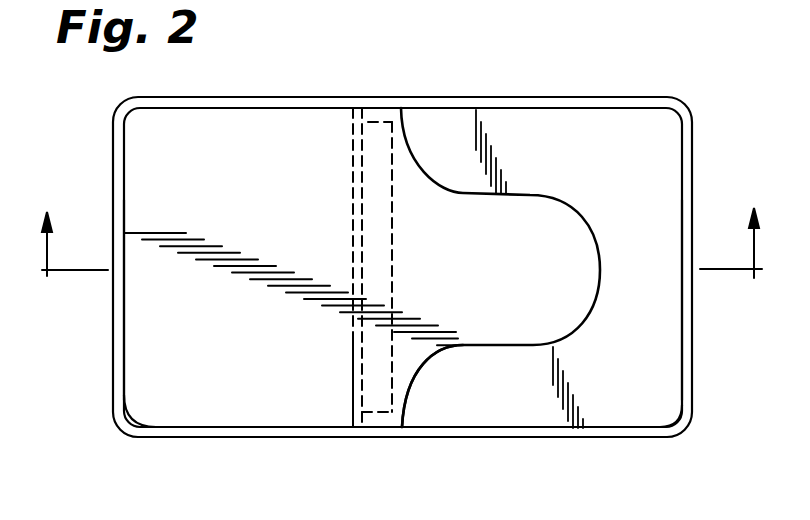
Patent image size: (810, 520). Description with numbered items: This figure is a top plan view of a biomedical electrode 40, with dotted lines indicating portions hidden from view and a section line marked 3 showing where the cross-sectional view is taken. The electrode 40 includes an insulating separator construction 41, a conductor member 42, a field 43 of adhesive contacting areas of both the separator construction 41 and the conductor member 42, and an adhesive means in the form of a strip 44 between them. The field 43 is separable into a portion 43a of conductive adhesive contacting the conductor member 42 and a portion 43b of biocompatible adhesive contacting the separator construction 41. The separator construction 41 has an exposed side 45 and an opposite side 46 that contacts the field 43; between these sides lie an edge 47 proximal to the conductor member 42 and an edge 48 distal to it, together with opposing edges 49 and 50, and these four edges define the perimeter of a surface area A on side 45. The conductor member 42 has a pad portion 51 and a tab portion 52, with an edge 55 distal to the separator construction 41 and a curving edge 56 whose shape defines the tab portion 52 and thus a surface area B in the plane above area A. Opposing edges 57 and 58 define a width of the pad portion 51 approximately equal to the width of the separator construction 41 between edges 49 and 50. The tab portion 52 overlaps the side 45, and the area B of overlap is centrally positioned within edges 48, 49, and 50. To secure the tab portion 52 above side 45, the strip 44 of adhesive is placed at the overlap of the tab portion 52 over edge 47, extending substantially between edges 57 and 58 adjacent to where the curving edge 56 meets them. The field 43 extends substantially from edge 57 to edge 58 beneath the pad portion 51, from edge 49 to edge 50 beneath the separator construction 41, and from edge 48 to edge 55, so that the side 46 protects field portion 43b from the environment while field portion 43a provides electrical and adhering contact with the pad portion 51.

The electrode 40 is at (95, 431).
The insulating separator construction 41 is at (586, 405).
The conductor member 42 is at (283, 399).
The field of adhesive 43 is at (343, 428).
The field portion 43a is at (235, 431).
The field portion 43b is at (534, 430).
The strip of adhesive 44 is at (381, 118).
The side 45 is at (660, 377).
The side 46 is at (655, 408).
The edge 47 is at (357, 377).
The edge 48 is at (684, 342).
The edge 49 is at (540, 106).
The edge 50 is at (620, 428).
The pad portion 51 is at (142, 302).
The tab portion 52 is at (517, 308).
The edge 55 is at (126, 389).
The curving edge 56 is at (437, 363).
The edge 57 is at (233, 107).
The edge 58 is at (170, 431).
The area A is at (620, 122).
The area B is at (421, 190).
The section line 3- 3 is at (402, 243).